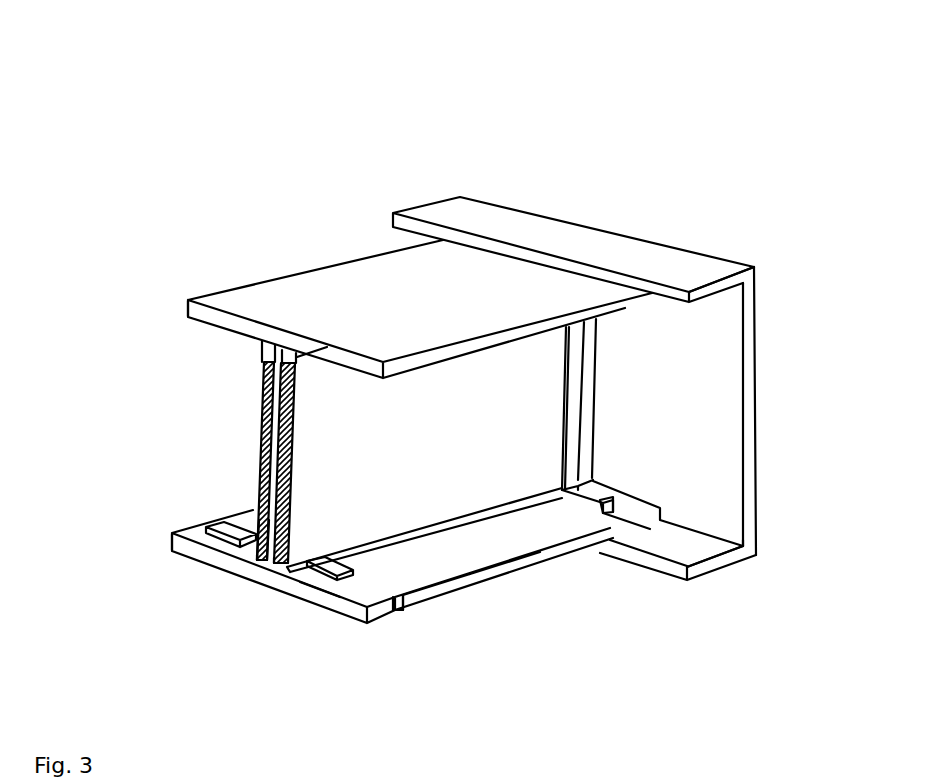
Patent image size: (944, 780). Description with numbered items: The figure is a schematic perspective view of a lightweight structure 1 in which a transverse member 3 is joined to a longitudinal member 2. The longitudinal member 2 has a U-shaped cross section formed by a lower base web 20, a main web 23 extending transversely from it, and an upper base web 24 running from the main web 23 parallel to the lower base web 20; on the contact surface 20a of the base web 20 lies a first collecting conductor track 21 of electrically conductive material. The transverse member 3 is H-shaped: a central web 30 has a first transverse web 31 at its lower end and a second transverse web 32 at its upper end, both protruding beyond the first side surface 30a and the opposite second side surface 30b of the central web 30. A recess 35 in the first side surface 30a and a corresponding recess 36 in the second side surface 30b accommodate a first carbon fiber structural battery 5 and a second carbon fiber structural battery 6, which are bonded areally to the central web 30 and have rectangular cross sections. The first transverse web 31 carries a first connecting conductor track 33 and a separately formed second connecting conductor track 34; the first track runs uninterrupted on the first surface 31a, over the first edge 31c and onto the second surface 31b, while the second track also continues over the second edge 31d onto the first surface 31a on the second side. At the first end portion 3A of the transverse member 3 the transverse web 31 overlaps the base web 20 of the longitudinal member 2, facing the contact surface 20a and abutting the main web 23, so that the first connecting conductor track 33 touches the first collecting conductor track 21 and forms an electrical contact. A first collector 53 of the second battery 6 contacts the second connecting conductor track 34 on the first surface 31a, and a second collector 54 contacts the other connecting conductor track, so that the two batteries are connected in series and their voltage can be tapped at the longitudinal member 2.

The lightweight structure 1 is at (258, 102).
The longitudinal member 2 is at (766, 398).
The transverse member 3 is at (218, 274).
The first end portion 3A is at (580, 276).
The first carbon fiber structural battery 5 is at (335, 427).
The second carbon fiber structural battery 6 is at (257, 423).
The lower base web 20 is at (692, 583).
The contact surface 20a is at (716, 530).
The first collecting conductor track 21 is at (705, 557).
The main web 23 is at (751, 333).
The second upper base web 24 is at (708, 284).
The central web 30 is at (266, 497).
The first side surface 30a is at (291, 586).
The second side surface 30b is at (243, 552).
The first transverse web 31 is at (518, 565).
The first surface 31a is at (413, 565).
The second surface 31b is at (272, 588).
The first edge 31c is at (486, 590).
The second edge 31d is at (162, 542).
The second transverse web 32 is at (186, 306).
The first connecting conductor track 33 is at (623, 518).
The second connecting conductor track 34 is at (222, 522).
The recess 35 is at (296, 448).
The recess 36 is at (257, 470).
The first collector 53 is at (573, 430).
The second collector 54 is at (330, 560).